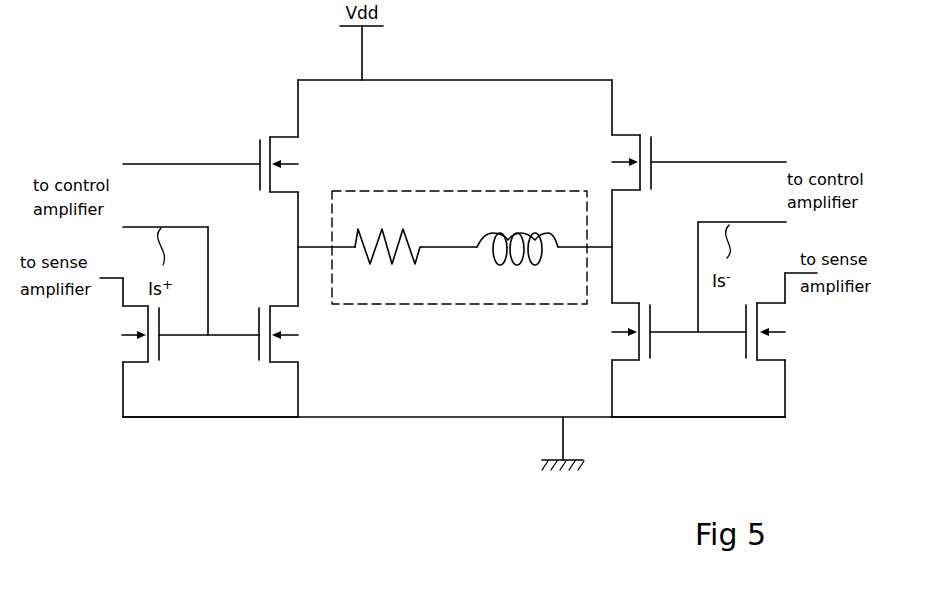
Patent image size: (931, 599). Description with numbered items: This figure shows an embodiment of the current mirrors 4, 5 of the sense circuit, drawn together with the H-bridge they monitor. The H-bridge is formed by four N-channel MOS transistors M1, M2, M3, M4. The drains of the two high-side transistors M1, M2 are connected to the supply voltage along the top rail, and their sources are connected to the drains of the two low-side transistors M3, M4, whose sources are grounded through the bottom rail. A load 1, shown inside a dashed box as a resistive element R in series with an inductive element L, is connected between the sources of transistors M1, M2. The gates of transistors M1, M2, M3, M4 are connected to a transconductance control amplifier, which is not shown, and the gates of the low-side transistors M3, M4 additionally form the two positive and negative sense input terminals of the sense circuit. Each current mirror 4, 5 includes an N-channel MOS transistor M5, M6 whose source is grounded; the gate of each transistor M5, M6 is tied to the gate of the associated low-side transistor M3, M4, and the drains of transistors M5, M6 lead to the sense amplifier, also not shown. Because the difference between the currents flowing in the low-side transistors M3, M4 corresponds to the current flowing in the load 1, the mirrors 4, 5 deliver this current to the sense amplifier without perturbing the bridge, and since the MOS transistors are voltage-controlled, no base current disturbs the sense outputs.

The load 1 is at (455, 227).
The current mirror 4 is at (194, 395).
The current mirror 5 is at (684, 393).
The high-side transistor M1 is at (230, 193).
The high-side transistor M2 is at (677, 191).
The low-side transistor M3 is at (247, 361).
The low-side transistor M4 is at (659, 360).
The N-channel MOS transistor M5 is at (119, 347).
The N-channel MOS transistor M6 is at (784, 345).
The resistor R is at (388, 235).
The inductor L is at (517, 235).